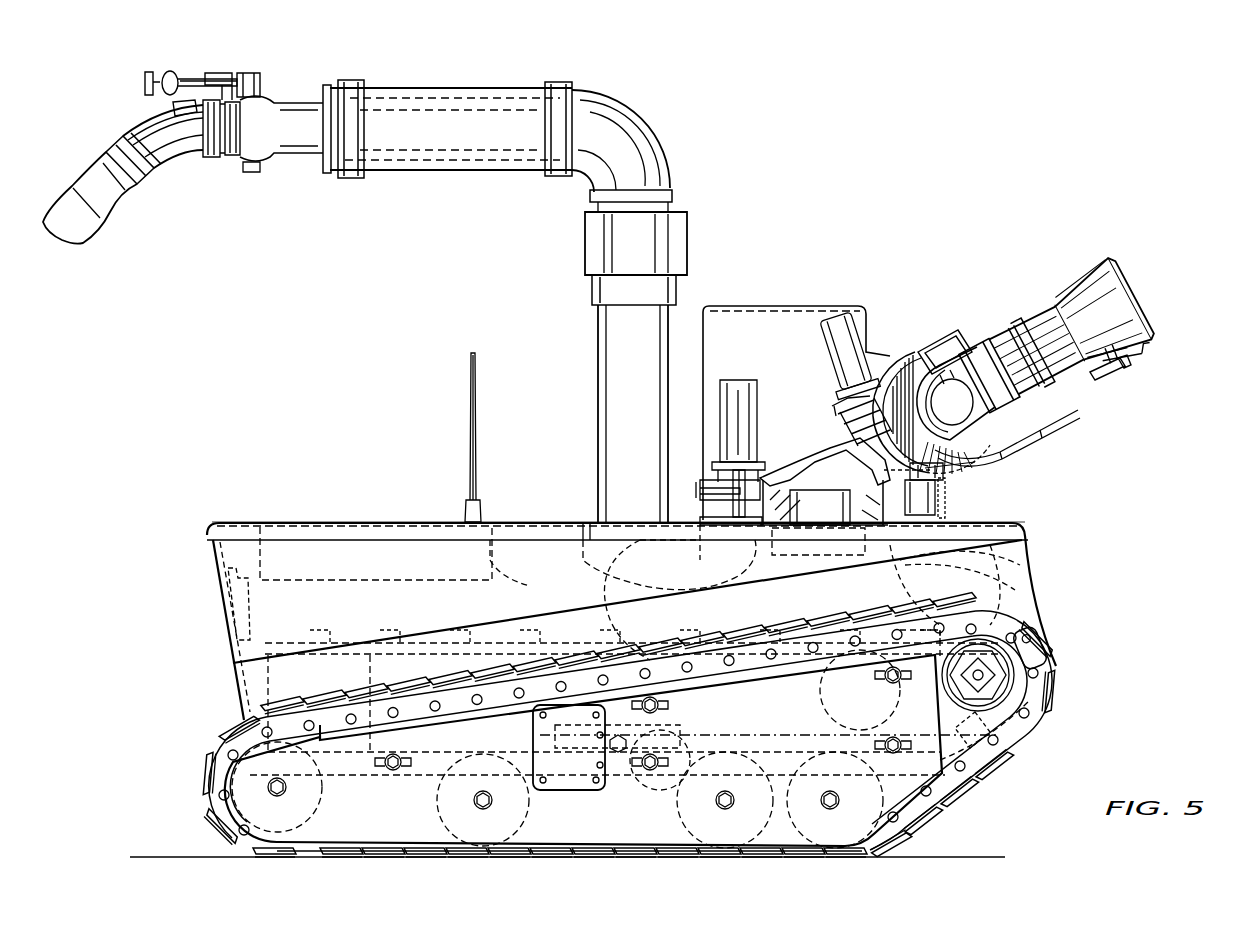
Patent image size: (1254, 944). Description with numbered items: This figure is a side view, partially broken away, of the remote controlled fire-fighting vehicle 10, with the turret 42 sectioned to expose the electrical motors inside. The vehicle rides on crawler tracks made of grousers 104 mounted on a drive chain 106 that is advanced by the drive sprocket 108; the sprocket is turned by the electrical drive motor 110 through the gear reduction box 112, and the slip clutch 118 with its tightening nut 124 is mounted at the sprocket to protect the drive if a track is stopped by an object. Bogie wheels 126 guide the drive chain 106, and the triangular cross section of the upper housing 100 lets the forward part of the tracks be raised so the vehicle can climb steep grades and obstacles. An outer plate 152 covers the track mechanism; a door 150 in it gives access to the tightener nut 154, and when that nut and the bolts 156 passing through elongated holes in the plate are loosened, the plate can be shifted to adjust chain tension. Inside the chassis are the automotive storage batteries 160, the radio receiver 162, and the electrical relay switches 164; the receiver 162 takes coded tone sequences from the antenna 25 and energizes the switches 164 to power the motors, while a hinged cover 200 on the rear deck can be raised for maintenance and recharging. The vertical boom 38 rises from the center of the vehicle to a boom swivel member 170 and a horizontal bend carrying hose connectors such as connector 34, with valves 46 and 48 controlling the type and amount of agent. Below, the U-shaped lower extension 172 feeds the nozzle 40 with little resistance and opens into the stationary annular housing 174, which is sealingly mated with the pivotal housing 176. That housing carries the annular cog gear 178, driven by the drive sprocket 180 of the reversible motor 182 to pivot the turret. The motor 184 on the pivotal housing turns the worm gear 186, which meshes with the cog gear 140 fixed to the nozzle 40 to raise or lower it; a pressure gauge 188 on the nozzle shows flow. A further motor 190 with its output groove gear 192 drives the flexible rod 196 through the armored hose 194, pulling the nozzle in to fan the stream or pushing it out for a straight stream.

The remote controlled vehicle 10 is at (274, 489).
The antenna 25 is at (470, 402).
The threaded pipe connector 34 is at (172, 158).
The vertical boom 38 is at (598, 402).
The nozzle 40 is at (1053, 300).
The pivotable turret 42 is at (772, 306).
The valve 46 is at (149, 70).
The valve 48 is at (180, 70).
The upper housing 100 is at (1018, 538).
The grousers 104 is at (980, 772).
The drive chain 106 is at (1020, 705).
The drive sprocket 108 is at (995, 718).
The electrical drive motor 110 is at (942, 805).
The gear reduction box 112 is at (955, 790).
The slip clutch 118 is at (1010, 688).
The tightening nut 124 is at (1005, 675).
The bogie wheels 126 is at (808, 735).
The cog gear 140 is at (896, 352).
The door 150 is at (570, 790).
The outer plate 152 is at (583, 750).
The tightener nut 154 is at (690, 738).
The bolts 156 is at (651, 772).
The automotive storage batteries 160 is at (748, 623).
The radio receiver 162 is at (540, 586).
The electrical relay switches 164 is at (222, 611).
The boom swivel member 170 is at (585, 239).
The U-shaped lower extension 172 is at (586, 558).
The stationary annular housing 174 is at (778, 551).
The pivotal housing 176 is at (878, 462).
The annular cog gear 178 is at (895, 505).
The drive sprocket 180 is at (735, 528).
The reversible electrical drive motor 182 is at (758, 382).
The electrical motor 184 is at (818, 334).
The worm gear 186 is at (838, 428).
The pressure gauge 188 is at (936, 336).
The electrical motor 190 is at (935, 492).
The output groove gear 192 is at (945, 472).
The armored hose 194 is at (1022, 422).
The rod 196 is at (1090, 388).
The cover 200 is at (378, 520).